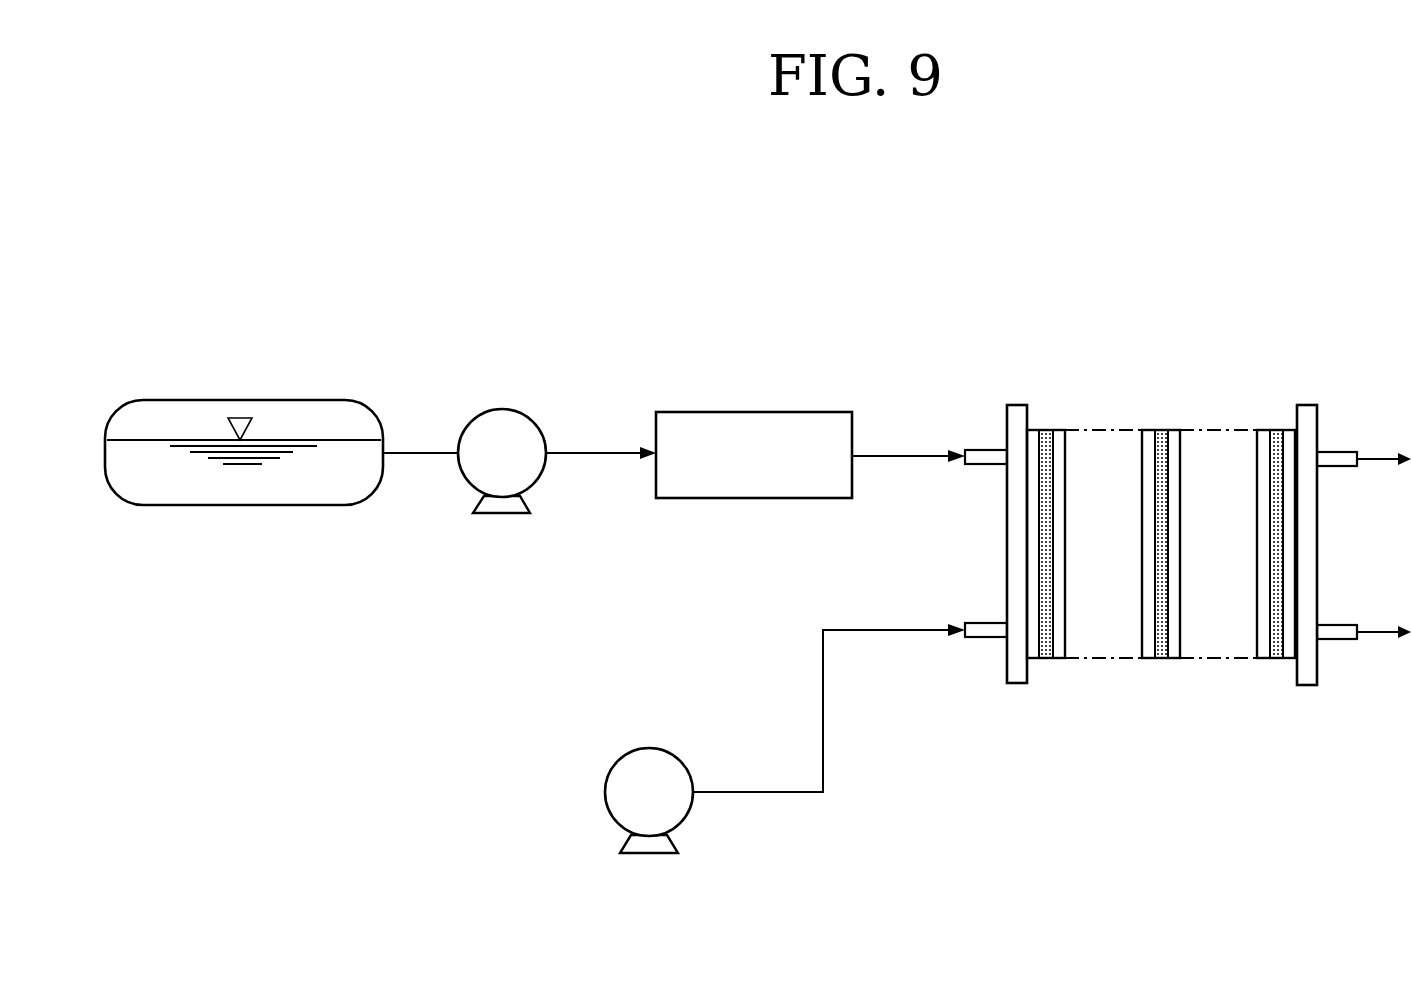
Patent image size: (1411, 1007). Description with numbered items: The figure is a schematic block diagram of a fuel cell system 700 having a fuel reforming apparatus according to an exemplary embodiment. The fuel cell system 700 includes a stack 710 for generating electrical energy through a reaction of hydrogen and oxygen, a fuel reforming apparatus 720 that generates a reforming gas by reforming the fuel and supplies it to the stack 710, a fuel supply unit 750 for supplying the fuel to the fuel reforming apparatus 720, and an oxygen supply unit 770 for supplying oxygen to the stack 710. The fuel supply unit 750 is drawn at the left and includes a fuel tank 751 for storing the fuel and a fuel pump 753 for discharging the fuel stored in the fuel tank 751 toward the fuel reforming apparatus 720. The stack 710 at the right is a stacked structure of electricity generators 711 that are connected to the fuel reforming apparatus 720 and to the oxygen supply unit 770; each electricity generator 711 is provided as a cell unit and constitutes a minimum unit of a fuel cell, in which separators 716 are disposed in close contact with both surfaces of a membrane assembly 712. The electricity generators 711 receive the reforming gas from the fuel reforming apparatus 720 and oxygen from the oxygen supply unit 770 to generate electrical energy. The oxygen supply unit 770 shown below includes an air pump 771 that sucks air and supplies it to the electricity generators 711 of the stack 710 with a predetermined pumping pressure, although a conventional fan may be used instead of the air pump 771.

The fuel cell system 700 is at (1188, 431).
The stack 710 is at (1188, 494).
The electricity generator 711 is at (1166, 480).
The membrane assembly 712 is at (1162, 430).
The separator 716 is at (1147, 430).
The fuel reforming apparatus 720 is at (793, 412).
The fuel supply unit 750 is at (325, 462).
The fuel tank 751 is at (311, 400).
The fuel pump 753 is at (500, 409).
The oxygen supply unit 770 is at (599, 772).
The air pump 771 is at (648, 748).